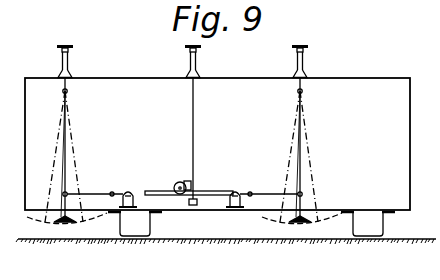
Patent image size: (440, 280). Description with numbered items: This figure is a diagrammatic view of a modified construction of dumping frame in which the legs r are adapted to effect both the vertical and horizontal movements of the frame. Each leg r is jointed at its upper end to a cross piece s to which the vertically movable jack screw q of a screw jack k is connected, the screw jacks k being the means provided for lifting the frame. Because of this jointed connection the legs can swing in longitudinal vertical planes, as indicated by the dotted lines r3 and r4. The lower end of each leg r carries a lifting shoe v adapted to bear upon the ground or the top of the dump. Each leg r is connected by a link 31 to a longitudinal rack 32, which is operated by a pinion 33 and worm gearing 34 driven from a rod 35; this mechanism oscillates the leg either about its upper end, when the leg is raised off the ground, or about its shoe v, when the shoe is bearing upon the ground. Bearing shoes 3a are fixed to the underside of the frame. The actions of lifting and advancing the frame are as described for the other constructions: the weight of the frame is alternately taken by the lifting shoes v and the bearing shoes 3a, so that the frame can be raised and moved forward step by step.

The screw jack k is at (68, 62).
The jack screw q is at (69, 88).
The cross piece s is at (62, 92).
The leg r is at (71, 129).
The dotted-line swung position of leg r4 is at (290, 158).
The dotted-line swung position of leg r3 is at (76, 165).
The lifting shoe v is at (54, 223).
The link 31 is at (182, 184).
The longitudinal rack 32 is at (151, 182).
The pinion 33 is at (181, 182).
The worm gearing 34 is at (191, 183).
The rod 35 is at (193, 128).
The bearing shoe 3a is at (251, 223).